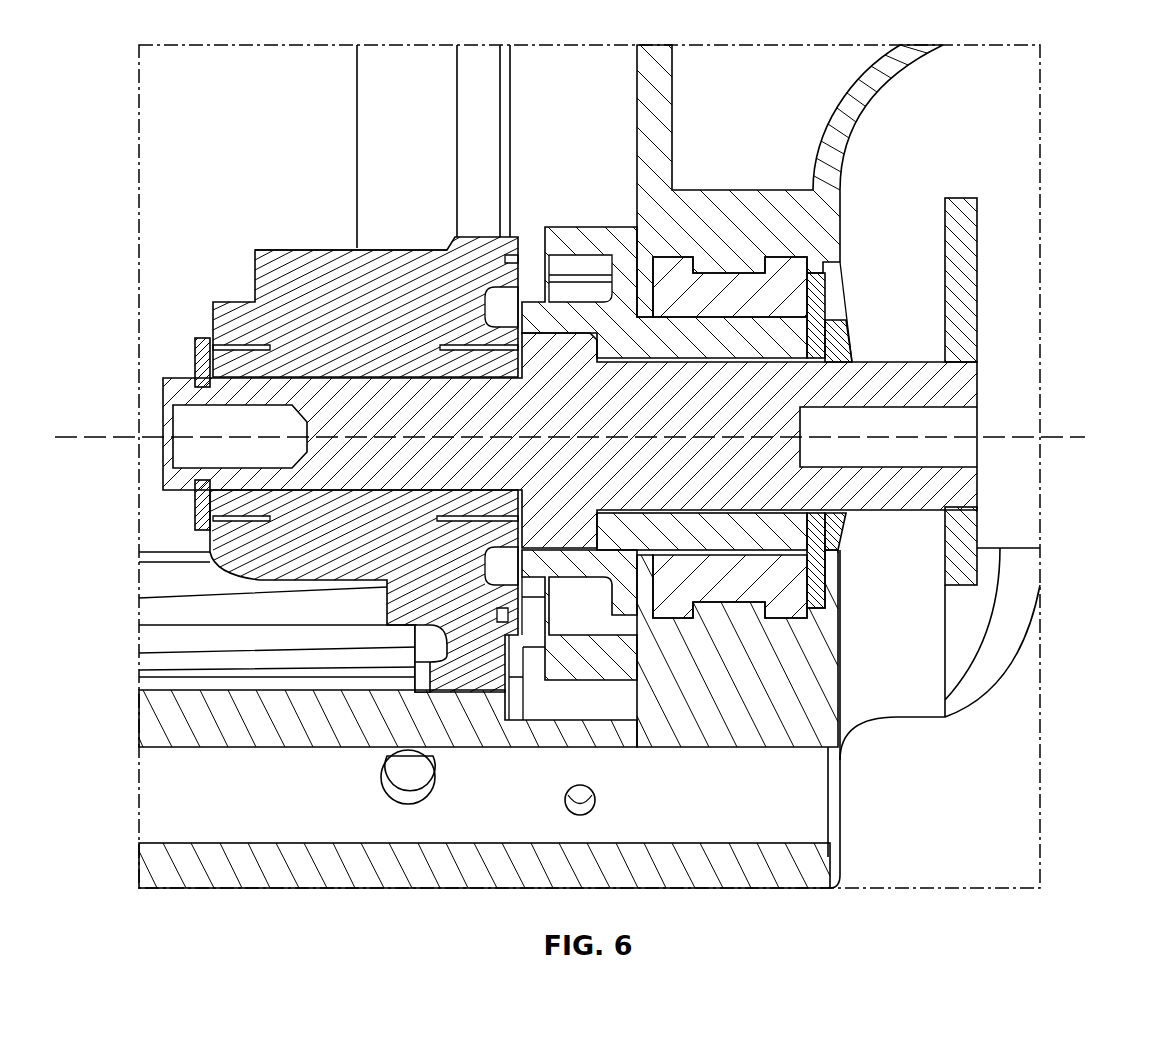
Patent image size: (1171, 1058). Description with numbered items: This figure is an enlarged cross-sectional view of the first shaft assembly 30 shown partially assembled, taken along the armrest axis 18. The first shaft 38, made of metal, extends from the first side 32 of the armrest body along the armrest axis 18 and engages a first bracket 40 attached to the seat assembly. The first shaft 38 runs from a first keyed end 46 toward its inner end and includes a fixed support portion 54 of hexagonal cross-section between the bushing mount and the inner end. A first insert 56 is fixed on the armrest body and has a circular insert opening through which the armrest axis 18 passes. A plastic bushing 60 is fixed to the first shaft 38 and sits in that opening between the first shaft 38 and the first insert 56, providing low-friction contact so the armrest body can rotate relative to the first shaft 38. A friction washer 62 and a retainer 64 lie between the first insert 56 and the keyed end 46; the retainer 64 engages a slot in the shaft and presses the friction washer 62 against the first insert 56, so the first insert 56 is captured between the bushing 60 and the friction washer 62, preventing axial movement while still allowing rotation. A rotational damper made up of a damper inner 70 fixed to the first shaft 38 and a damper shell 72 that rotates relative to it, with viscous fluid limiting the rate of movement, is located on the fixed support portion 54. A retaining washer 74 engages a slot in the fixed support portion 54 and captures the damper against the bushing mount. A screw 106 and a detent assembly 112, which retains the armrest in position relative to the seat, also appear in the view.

The armrest axis 18 is at (1097, 437).
The first shaft assembly 30 is at (927, 790).
The first side 32 is at (673, 120).
The first shaft 38 is at (690, 405).
The first bracket 40 is at (963, 560).
The first keyed end 46 is at (977, 473).
The fixed support portion 54 is at (343, 375).
The first insert 56 is at (733, 607).
The bushing 60 is at (677, 560).
The friction washer 62 is at (840, 547).
The retainer 64 is at (817, 587).
The damper inner 70 is at (477, 378).
The damper shell 72 is at (343, 247).
The retaining washer 74 is at (195, 507).
The screw 106 is at (422, 672).
The detent assembly 112 is at (615, 722).